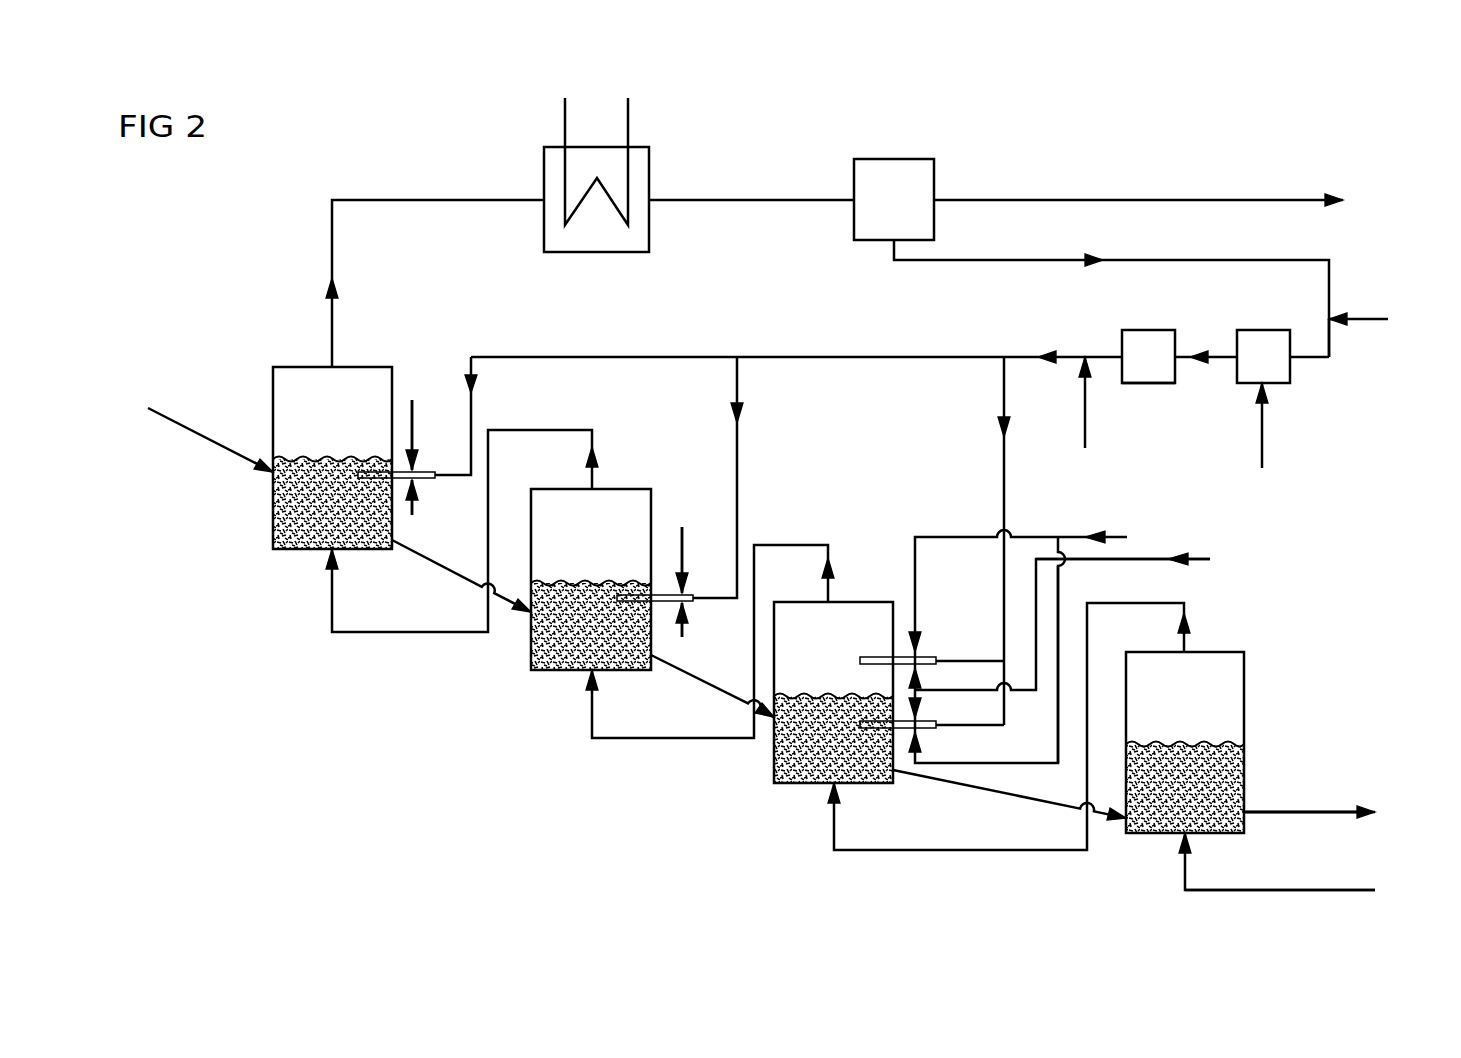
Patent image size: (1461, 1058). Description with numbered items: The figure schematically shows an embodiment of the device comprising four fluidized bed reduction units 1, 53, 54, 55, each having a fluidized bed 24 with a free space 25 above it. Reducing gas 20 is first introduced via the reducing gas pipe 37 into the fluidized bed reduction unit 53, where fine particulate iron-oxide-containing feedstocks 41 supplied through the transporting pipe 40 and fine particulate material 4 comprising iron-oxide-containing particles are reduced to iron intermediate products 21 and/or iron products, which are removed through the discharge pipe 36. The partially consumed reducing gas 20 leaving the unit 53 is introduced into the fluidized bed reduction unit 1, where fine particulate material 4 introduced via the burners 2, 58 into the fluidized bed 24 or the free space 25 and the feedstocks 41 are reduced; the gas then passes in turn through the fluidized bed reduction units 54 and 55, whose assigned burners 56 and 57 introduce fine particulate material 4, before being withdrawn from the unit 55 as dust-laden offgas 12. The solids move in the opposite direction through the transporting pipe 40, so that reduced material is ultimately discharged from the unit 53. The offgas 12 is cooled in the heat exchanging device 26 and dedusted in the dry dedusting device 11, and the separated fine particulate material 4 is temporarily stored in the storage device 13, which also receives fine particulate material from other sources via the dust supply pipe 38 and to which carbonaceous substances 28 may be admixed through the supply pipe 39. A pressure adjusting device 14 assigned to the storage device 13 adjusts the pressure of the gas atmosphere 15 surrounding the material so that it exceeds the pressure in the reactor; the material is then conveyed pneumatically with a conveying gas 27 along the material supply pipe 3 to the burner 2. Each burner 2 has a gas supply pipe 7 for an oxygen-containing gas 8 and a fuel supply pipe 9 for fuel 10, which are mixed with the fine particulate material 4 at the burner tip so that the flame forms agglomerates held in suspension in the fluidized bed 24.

The fluidized bed reduction unit 1 is at (875, 598).
The burner 2 is at (928, 730).
The material supply pipe 3 is at (1012, 355).
The fine particulate material 4 is at (1097, 268).
The gas supply pipe 7 is at (415, 512).
The oxygen-containing gas 8 is at (775, 621).
The fuel supply pipe 9 is at (415, 428).
The fuel 10 is at (821, 528).
The dry dedusting device 11 is at (936, 180).
The offgas 12 is at (338, 288).
The storage device 13 is at (1263, 328).
The pressure adjusting device 14 is at (1149, 328).
The gas atmosphere 15 is at (1152, 372).
The reducing gas 20 is at (585, 452).
The iron intermediate products 21 is at (1349, 814).
The fluidized bed 24 is at (282, 523).
The free space 25 is at (282, 386).
The heat exchanging device 26 is at (652, 173).
The conveying gas 27 is at (1085, 411).
The carbonaceous substances 28 is at (1374, 319).
The discharge pipe 36 is at (1303, 810).
The reducing gas pipe 37 is at (1303, 888).
The dust supply pipe 38 is at (1265, 440).
The supply pipe 39 is at (1375, 322).
The transporting pipe 40 is at (192, 437).
The fine particulate iron-oxide-containing feedstocks 41 is at (195, 429).
The fluidized bed reduction unit 53 is at (1217, 650).
The fluidized bed reduction unit 54 is at (640, 488).
The fluidized bed reduction unit 55 is at (298, 365).
The burner 56 is at (638, 592).
The burner 57 is at (368, 470).
The burner 58 is at (858, 662).